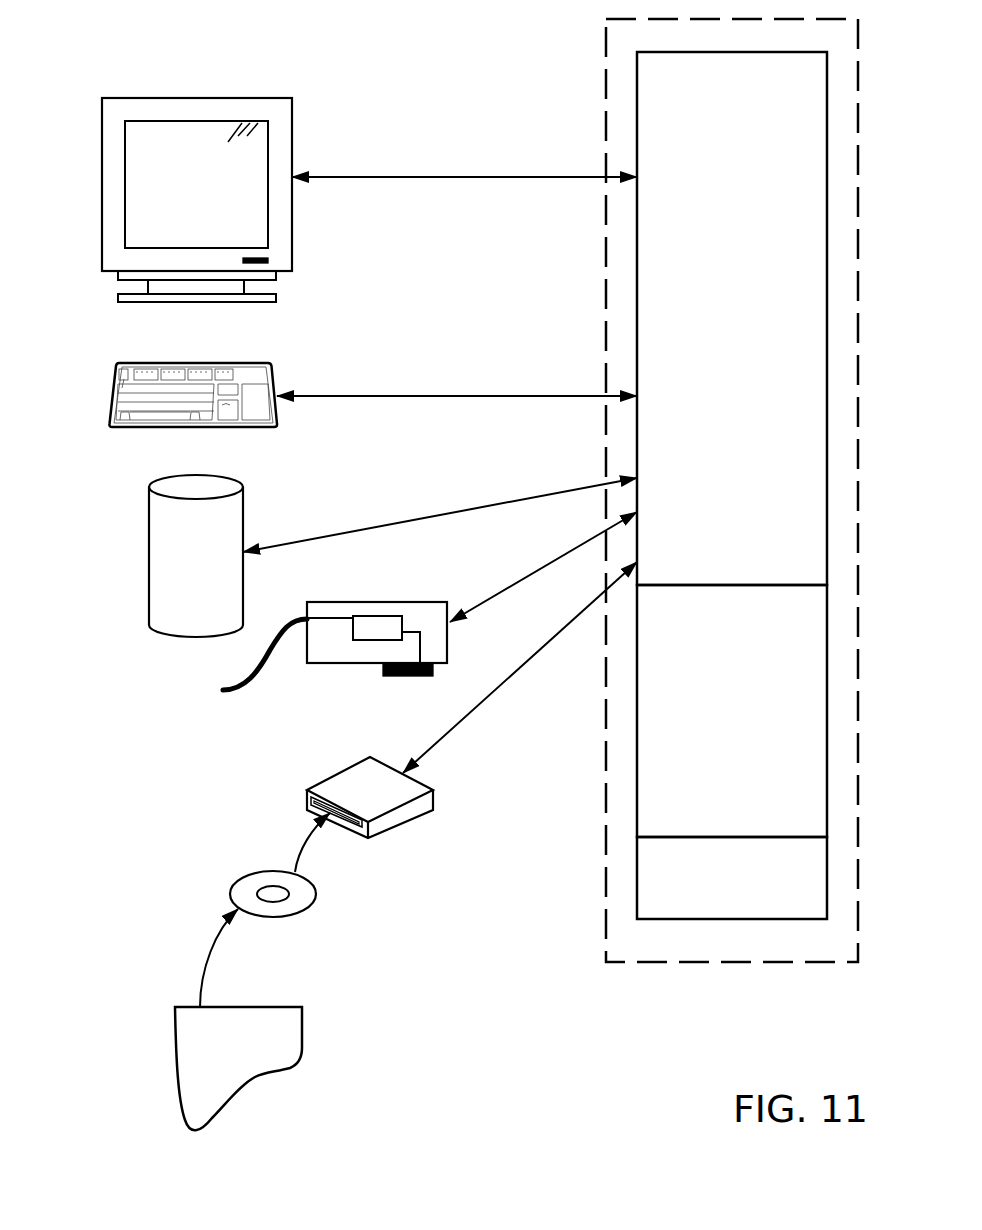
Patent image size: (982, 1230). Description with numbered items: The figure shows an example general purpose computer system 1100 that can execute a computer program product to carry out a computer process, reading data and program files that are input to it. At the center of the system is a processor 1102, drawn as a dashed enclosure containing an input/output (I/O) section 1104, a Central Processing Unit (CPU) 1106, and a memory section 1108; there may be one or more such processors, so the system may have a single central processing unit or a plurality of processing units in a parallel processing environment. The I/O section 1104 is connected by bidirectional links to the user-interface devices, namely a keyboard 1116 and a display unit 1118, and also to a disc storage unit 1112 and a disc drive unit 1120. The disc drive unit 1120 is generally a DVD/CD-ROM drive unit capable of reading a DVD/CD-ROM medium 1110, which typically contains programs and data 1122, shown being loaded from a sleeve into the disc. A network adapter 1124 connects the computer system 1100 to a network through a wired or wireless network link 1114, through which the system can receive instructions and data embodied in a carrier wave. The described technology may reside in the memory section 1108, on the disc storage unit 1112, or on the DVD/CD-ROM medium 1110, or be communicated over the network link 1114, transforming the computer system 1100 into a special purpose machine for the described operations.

The general purpose computer system 1100 is at (571, 1058).
The processor 1102 is at (606, 82).
The input/output (I/O) section 1104 is at (732, 318).
The central processing unit (CPU) 1106 is at (732, 711).
The memory section 1108 is at (732, 878).
The DVD/CD-ROM medium 1110 is at (247, 873).
The disc storage unit 1112 is at (149, 505).
The network link 1114 is at (247, 692).
The keyboard 1116 is at (152, 359).
The display unit 1118 is at (164, 95).
The disc drive unit 1120 is at (353, 790).
The programs and data 1122 is at (302, 1027).
The network adapter 1124 is at (353, 663).